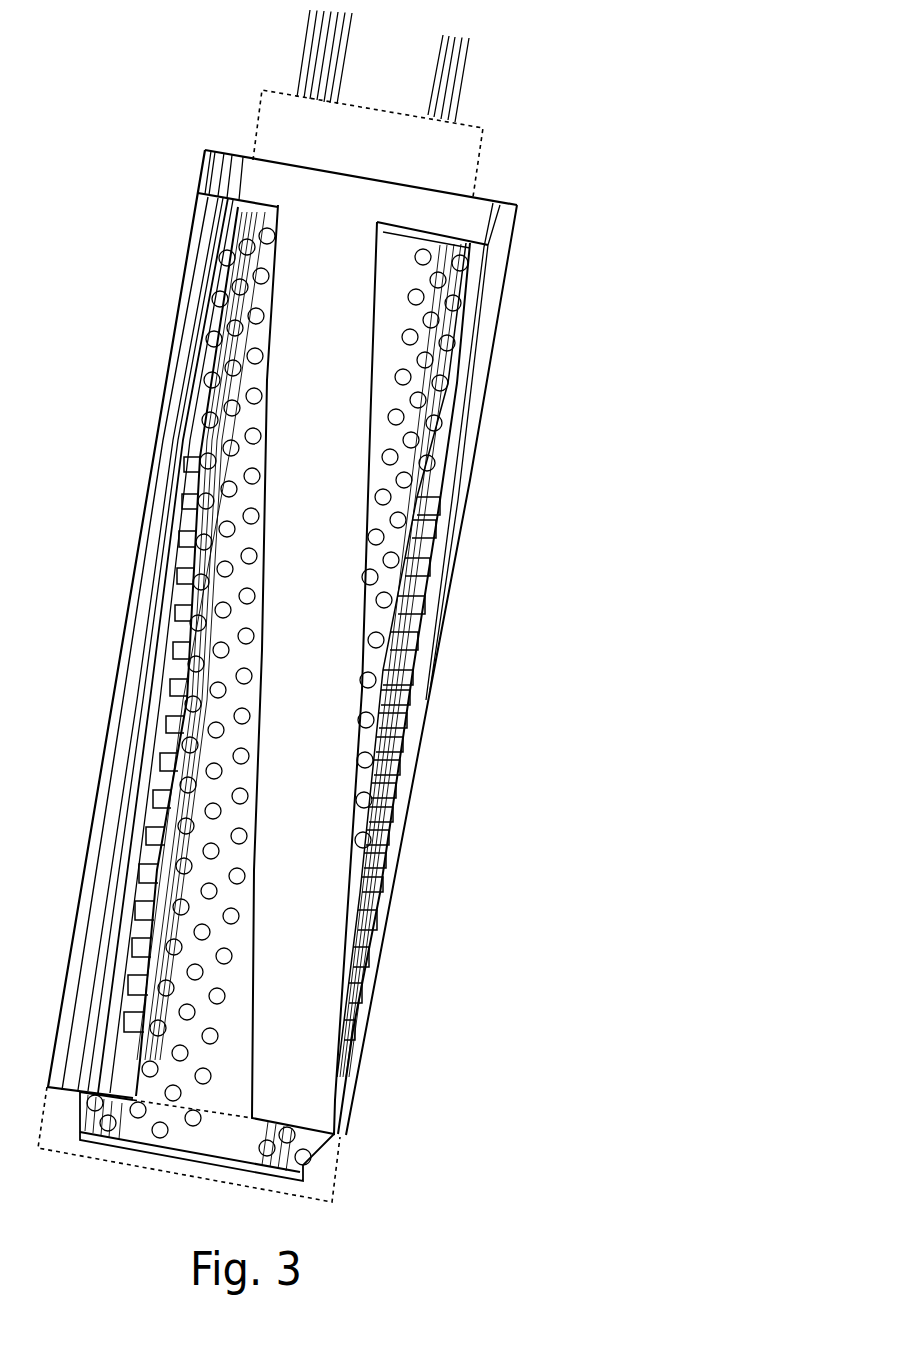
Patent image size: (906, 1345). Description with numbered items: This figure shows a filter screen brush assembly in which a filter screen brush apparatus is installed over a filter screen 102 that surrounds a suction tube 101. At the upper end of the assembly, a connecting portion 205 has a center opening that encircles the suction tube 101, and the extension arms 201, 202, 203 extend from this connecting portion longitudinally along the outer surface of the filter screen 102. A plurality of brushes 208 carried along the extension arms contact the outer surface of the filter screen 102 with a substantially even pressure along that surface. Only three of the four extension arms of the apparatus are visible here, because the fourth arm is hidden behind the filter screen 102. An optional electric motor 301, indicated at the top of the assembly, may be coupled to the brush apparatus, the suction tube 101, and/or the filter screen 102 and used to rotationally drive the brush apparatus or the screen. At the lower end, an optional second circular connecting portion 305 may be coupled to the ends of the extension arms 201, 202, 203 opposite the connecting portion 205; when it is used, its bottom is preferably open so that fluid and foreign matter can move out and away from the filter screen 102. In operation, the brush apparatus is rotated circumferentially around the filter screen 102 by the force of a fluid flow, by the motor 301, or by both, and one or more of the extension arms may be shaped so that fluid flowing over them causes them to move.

The suction tube 101 is at (460, 72).
The filter screen 102 is at (193, 1140).
The extension arm 201 is at (463, 400).
The extension arm 202 is at (353, 608).
The extension arm 203 is at (123, 638).
The connecting portion 205 is at (487, 200).
The brushes 208 is at (183, 382).
The electric motor 301 is at (262, 108).
The second circular connecting portion 305 is at (338, 1168).